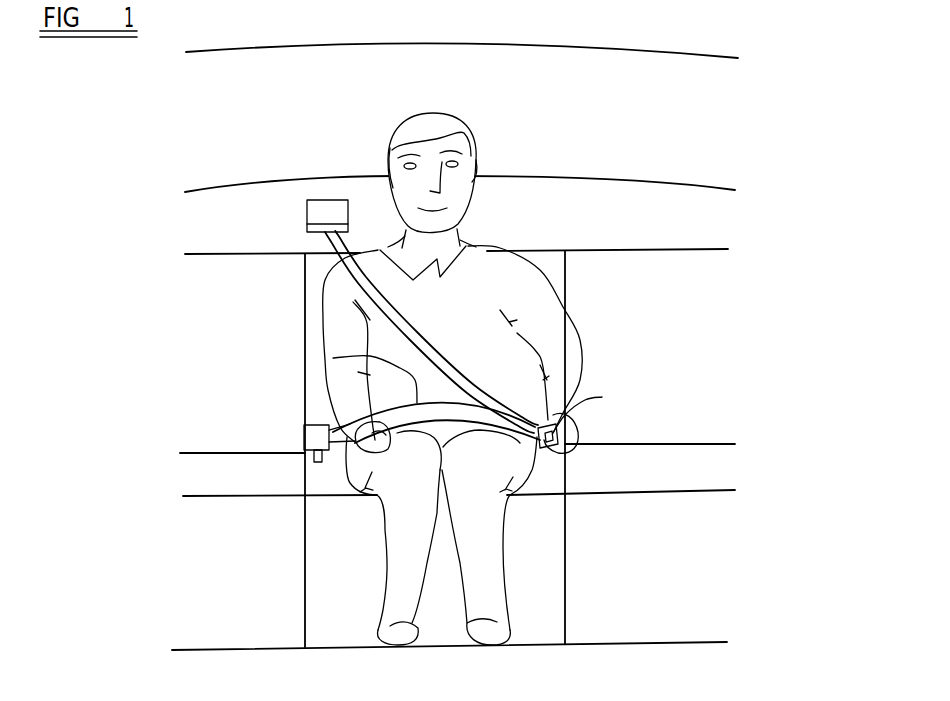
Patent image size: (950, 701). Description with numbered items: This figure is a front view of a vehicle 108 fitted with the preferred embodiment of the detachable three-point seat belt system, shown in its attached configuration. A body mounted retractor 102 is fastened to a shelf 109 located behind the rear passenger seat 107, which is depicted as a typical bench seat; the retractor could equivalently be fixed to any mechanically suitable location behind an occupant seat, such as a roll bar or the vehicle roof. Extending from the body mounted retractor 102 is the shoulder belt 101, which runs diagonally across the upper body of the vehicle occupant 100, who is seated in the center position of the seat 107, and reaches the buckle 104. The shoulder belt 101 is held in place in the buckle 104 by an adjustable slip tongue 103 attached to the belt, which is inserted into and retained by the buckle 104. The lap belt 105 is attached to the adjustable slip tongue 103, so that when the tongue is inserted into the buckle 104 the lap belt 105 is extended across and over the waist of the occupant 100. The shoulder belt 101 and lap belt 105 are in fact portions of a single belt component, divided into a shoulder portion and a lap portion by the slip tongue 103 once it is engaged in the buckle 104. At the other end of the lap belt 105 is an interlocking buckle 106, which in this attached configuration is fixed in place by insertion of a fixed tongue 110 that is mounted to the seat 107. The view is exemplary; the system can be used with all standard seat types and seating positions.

The vehicle occupant 100 is at (493, 337).
The shoulder belt 101 is at (355, 285).
The body mounted retractor 102 is at (323, 217).
The adjustable (slip) tongue 103 is at (573, 400).
The buckle 104 is at (565, 440).
The lap belt 105 is at (333, 360).
The interlocking buckle 106 is at (313, 437).
The vehicle seat 107 is at (679, 263).
The vehicle 108 is at (711, 53).
The shelf 109 is at (680, 220).
The fixed tongue 110 is at (317, 463).